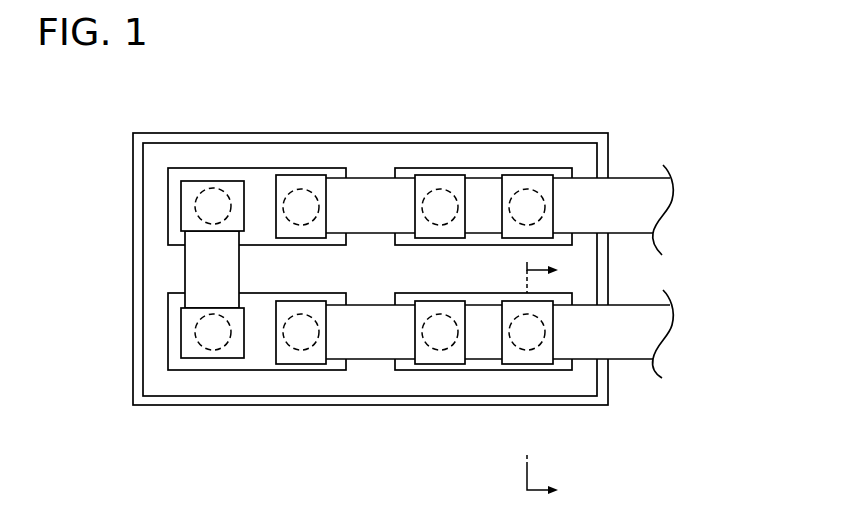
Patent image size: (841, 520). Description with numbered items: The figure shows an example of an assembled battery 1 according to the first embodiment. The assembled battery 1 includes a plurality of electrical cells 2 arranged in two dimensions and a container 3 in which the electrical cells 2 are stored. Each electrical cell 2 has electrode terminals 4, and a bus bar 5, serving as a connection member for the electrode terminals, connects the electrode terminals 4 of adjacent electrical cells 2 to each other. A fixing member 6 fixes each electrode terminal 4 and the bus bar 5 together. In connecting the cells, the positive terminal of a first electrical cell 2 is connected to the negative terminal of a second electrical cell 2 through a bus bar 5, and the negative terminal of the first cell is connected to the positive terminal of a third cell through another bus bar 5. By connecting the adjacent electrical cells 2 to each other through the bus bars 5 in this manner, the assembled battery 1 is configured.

The assembled battery 1 is at (648, 113).
The electrical cell 2 is at (255, 168).
The container 3 is at (527, 133).
The electrode terminal 4 is at (302, 188).
The bus bar 5 is at (367, 178).
The fixing member 6 is at (452, 175).